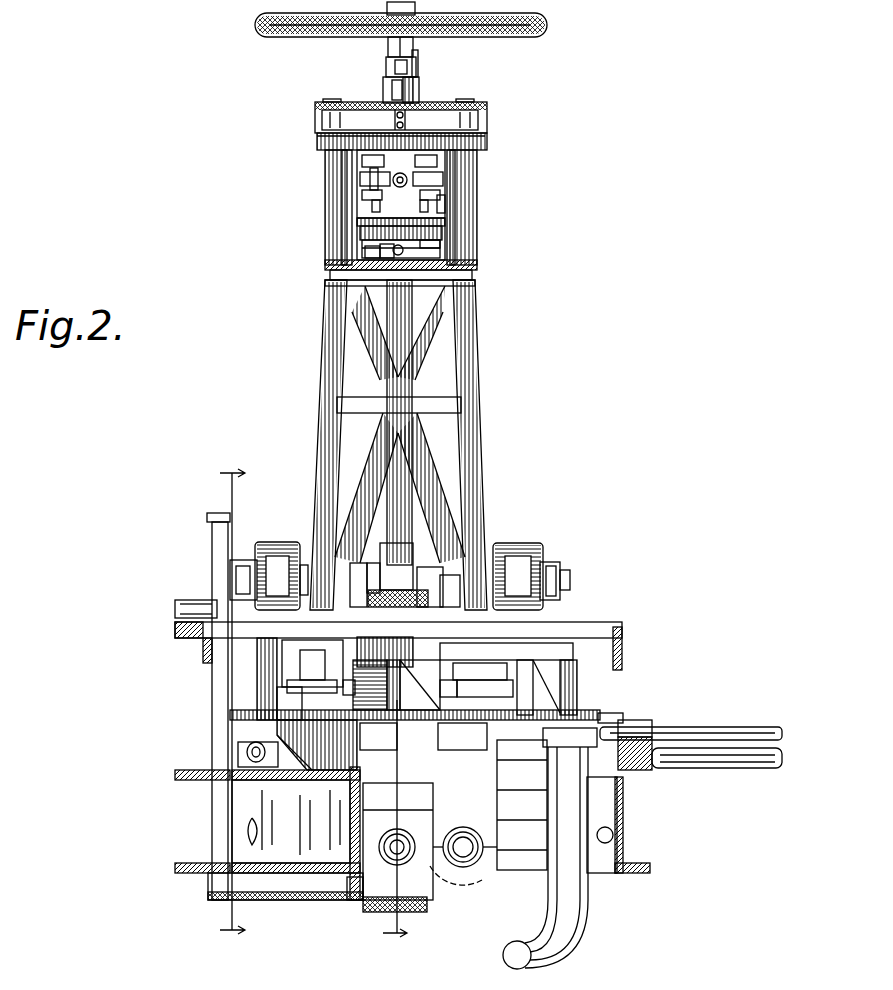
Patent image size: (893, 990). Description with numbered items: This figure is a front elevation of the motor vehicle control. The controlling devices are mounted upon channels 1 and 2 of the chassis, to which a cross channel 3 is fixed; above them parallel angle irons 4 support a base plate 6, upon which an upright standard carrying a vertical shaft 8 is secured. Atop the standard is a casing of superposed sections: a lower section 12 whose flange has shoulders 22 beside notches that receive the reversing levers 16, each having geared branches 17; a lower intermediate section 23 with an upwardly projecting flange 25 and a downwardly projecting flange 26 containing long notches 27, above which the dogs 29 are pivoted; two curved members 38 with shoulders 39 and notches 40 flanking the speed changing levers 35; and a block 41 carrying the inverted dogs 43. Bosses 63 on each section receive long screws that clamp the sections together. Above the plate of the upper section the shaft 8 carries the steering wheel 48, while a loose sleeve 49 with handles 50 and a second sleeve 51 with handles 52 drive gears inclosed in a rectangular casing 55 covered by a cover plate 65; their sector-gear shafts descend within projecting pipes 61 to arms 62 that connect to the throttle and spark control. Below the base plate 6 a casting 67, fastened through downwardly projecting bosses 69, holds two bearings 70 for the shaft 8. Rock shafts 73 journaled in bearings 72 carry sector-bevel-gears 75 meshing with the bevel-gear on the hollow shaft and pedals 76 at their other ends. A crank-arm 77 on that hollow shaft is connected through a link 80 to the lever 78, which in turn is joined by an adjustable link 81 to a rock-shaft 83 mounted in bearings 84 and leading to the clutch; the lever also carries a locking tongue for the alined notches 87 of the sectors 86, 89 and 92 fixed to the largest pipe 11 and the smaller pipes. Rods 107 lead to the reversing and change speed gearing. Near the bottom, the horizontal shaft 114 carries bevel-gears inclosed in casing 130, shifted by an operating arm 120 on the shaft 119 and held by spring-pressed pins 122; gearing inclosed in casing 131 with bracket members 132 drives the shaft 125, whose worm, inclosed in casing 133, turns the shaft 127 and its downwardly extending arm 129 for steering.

The steering wheel 48 is at (253, 30).
The shaft 8 is at (390, 50).
The loose sleeve 49 is at (392, 66).
The arms or handles 50 is at (414, 64).
The arms or handles 52 is at (392, 82).
The second sleeve 51 is at (414, 90).
The cover plate 65 is at (445, 108).
The rectangular casing 55 is at (347, 118).
The rectangular block 41 is at (338, 142).
The dogs 43 is at (360, 162).
The curved members 38 is at (360, 179).
The pivoted member or dog 29 is at (427, 175).
The notch 40 is at (362, 195).
The speed changing lever 35 is at (370, 211).
The shoulder 39 is at (414, 211).
The upwardly projecting flange 25 is at (447, 205).
The lower intermediate section 23 is at (473, 218).
The downwardly projecting flange 26 is at (452, 230).
The long notch 27 is at (453, 248).
The branch 17 is at (360, 246).
The hand lever (reversing lever) 16 is at (394, 250).
The shoulder 22 is at (437, 240).
The lower section 12 is at (380, 252).
The integral projections or bosses 63 is at (342, 208).
The projecting pipes 61 is at (337, 297).
The largest pipe 11 is at (395, 467).
The channel 1 is at (650, 842).
The pedal 76 is at (270, 543).
The rock shaft 73 is at (304, 572).
The bearing 72 is at (248, 590).
The spring-pressed pin 122 is at (222, 605).
The sector-bevel-gear 75 is at (362, 580).
The link 80 is at (372, 643).
The crank-arm 77 is at (360, 640).
The lever 78 is at (400, 650).
The angle irons 4 is at (190, 638).
The downwardly projecting bosses 69 is at (267, 660).
The base plate 6 is at (320, 630).
The sector 86 is at (343, 677).
The sector 89 is at (367, 687).
The notches 87 is at (450, 668).
The arm 62 is at (280, 690).
The sector 92 is at (451, 698).
The operating arm 120 is at (217, 722).
The rock-shaft 83 is at (247, 754).
The adjustable link 81 is at (347, 783).
The bearings 84 is at (275, 770).
The channel 2 is at (350, 810).
The horizontal shaft 114 is at (350, 838).
The horizontal shaft 119 is at (323, 885).
The casing 130 is at (390, 888).
The bearings 70 is at (394, 784).
The casing 133 is at (470, 915).
The shaft 125 is at (483, 862).
The casing 131 is at (483, 888).
The integral bracket members 132 is at (600, 833).
The cross channel 3 is at (607, 862).
The casting 67 is at (623, 723).
The rod 107 is at (770, 713).
The horizontal shaft 127 is at (757, 752).
The downwardly extending arm 129 is at (563, 923).